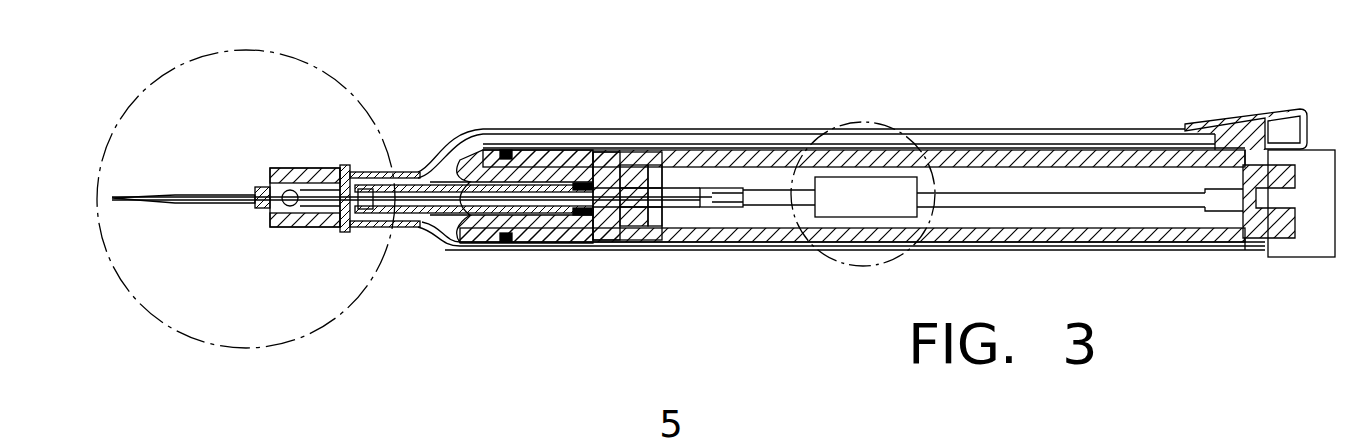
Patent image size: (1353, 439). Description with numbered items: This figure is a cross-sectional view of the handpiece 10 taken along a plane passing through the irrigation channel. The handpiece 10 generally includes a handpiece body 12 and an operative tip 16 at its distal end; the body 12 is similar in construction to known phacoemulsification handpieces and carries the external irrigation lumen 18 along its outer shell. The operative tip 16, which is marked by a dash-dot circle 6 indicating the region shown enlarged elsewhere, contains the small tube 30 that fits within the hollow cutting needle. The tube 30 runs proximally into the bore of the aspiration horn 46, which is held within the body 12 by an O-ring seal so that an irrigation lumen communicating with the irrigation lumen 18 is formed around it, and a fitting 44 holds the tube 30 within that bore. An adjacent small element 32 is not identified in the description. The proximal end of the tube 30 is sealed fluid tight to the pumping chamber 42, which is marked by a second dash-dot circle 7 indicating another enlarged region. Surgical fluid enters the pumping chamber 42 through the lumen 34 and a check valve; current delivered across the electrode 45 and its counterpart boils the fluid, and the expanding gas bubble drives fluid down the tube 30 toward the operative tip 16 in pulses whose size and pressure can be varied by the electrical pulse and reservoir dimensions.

The handpiece 10 is at (1170, 79).
The external irrigation lumen 18 is at (700, 129).
The handpiece body 12 is at (600, 249).
The aspiration horn 46 is at (478, 214).
The tube 30 is at (680, 198).
The fitting 44 is at (641, 164).
The piston 32 is at (722, 208).
The pumping chamber 42 is at (832, 177).
The lumen 34 is at (1105, 193).
The electrode 45 is at (1283, 241).
The detail region of FIG. 7 is at (840, 126).
The detail region of FIG. 6 is at (196, 348).
The operative tip 16 is at (254, 172).